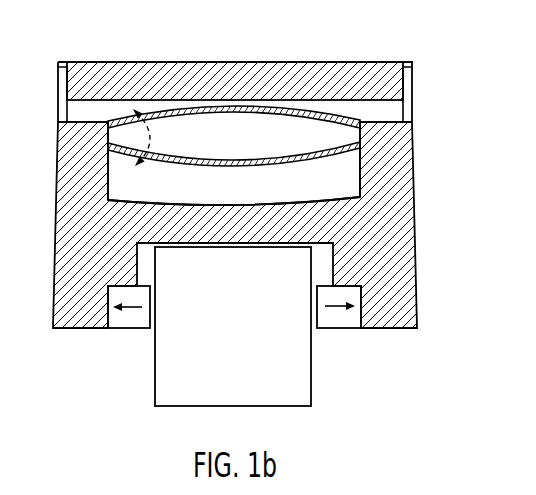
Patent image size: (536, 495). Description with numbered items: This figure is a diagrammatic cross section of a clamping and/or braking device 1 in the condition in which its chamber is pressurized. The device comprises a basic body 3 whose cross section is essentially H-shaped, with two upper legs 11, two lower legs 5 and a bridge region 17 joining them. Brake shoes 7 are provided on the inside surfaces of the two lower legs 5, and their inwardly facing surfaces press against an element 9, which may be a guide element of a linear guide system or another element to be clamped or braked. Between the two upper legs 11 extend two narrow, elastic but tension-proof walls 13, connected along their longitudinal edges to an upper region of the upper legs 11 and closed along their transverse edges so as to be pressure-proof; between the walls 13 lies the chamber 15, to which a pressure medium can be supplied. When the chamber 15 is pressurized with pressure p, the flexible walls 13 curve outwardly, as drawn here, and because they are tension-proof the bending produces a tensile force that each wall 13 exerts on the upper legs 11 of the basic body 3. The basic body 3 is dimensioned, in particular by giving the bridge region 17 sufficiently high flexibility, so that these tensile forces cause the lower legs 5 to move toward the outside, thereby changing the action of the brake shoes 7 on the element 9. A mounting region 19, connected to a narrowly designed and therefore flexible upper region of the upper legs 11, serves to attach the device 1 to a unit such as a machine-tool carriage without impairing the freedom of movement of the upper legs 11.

The clamping and/or braking device 1 is at (261, 33).
The basic body 3 is at (404, 134).
The lower legs 5 is at (77, 329).
The brake shoes 7 is at (130, 318).
The element 9 is at (243, 329).
The upper legs 11 is at (103, 178).
The elastic tension-proof walls 13 is at (231, 112).
The chamber 15 is at (198, 146).
The bridge region 17 is at (210, 218).
The mounting region 19 is at (321, 67).